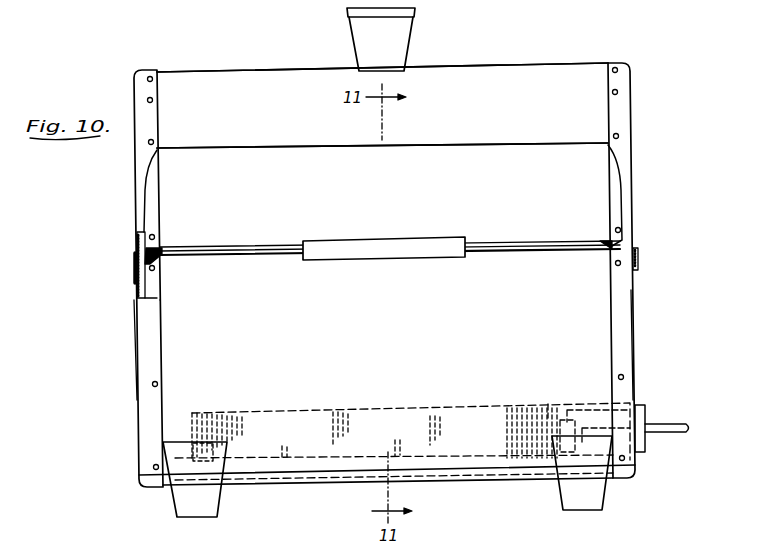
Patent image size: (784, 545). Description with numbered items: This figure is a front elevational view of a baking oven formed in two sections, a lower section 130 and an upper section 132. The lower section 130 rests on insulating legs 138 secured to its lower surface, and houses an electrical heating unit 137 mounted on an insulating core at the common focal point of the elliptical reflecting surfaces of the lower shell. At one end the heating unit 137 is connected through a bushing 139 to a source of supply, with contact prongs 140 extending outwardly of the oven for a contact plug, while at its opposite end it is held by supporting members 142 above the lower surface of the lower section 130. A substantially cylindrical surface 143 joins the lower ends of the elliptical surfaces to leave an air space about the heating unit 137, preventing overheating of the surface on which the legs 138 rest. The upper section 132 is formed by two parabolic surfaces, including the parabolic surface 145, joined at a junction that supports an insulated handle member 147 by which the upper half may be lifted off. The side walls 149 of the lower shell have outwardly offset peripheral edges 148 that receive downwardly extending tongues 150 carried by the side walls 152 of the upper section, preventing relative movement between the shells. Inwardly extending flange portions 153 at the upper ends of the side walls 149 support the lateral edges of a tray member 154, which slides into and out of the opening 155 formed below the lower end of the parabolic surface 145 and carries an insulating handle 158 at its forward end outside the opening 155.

The lower section 130 is at (590, 341).
The upper section 132 is at (580, 68).
The electrical heating unit 137 is at (347, 410).
The insulating legs 138 is at (182, 502).
The bushing 139 is at (647, 412).
The contact prongs 140 is at (680, 432).
The supporting members 142 is at (190, 460).
The substantially cylindrical surface 143 is at (460, 482).
The parabolic surface 145 is at (226, 82).
The insulated handle member 147 is at (401, 30).
The outwardly offset peripheral edges 148 is at (137, 265).
The side walls 149 is at (141, 365).
The downwardly extending tongues 150 is at (135, 258).
The side walls 152 is at (138, 159).
The inwardly extending flange portions 153 is at (145, 297).
The tray member 154 is at (182, 248).
The opening 155 is at (470, 157).
The insulating handle 158 is at (415, 250).